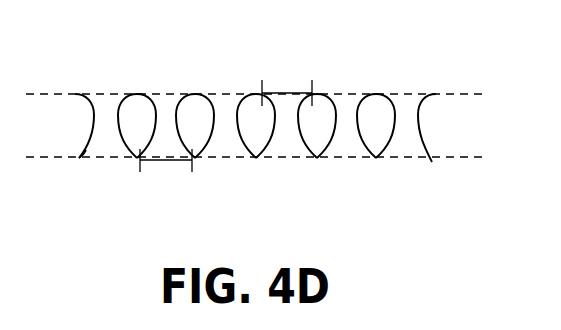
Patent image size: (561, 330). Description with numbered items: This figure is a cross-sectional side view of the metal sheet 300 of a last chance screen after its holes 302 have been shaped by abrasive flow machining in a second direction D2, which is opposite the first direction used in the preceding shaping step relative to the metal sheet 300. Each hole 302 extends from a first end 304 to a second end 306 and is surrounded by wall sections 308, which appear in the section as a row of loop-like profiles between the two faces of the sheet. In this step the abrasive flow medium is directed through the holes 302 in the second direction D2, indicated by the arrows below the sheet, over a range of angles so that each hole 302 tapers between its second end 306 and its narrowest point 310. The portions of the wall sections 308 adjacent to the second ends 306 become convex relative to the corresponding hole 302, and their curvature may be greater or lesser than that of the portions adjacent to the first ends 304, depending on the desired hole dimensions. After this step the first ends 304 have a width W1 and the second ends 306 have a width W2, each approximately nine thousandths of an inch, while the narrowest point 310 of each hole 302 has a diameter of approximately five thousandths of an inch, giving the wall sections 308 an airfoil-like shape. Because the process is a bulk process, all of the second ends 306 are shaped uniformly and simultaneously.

The metal sheet 300 is at (257, 127).
The holes 302 is at (231, 118).
The first end 304 is at (108, 102).
The second end 306 is at (93, 158).
The wall sections 308 is at (430, 157).
The narrowest point 310 is at (420, 118).
The width of first end W1 is at (287, 93).
The width of second end W2 is at (160, 160).
The second direction D2 is at (107, 170).